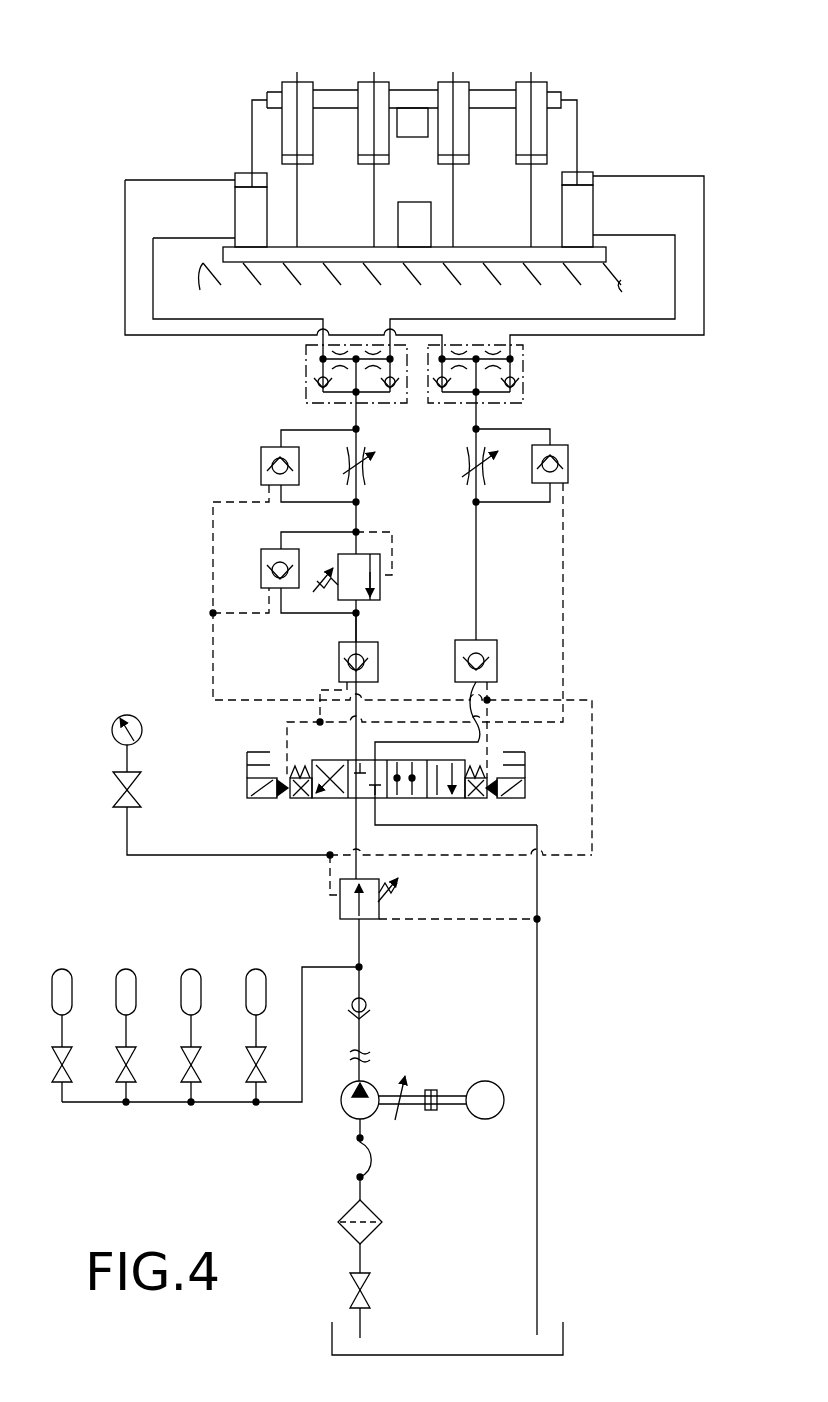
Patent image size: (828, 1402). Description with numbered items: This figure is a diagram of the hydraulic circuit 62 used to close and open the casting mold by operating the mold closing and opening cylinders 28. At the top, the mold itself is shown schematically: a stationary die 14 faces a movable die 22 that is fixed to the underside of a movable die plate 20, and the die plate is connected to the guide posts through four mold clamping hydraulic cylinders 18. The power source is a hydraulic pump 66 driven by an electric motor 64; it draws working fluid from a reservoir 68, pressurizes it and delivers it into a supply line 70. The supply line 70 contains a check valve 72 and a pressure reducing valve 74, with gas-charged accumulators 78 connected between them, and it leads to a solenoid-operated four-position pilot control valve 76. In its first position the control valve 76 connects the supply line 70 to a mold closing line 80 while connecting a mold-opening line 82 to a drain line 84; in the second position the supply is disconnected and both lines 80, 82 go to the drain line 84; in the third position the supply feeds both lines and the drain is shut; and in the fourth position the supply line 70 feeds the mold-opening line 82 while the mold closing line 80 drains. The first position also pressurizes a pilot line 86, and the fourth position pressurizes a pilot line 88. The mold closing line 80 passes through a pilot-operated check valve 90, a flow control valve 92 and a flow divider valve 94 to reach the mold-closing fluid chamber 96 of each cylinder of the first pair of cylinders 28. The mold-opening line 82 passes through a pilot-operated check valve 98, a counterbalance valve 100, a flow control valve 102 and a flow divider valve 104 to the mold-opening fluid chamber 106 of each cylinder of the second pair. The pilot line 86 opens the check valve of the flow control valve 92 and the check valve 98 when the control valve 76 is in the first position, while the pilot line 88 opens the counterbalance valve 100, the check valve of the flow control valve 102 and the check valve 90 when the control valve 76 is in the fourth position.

The stationary die 14 is at (414, 214).
The mold clamping hydraulic cylinders 18 is at (278, 77).
The movable die plate 20 is at (333, 97).
The movable die 22 is at (412, 118).
The mold closing and opening cylinders 28 is at (411, 165).
The hydraulic circuit 62 is at (693, 1039).
The electric motor 64 is at (485, 1120).
The hydraulic pump 66 is at (337, 1118).
The reservoir 68 is at (565, 1338).
The supply line 70 is at (359, 947).
The check valve 72 is at (362, 1000).
The pressure reducing valve 74 is at (340, 910).
The solenoid-operated 4-position pilot control valve 76 is at (228, 786).
The gas-charged accumulators 78 is at (62, 973).
The mold closing line 80 is at (480, 592).
The mold-opening line 82 is at (358, 627).
The drain line 84 is at (540, 986).
The pilot line 86 is at (565, 660).
The pilot line 88 is at (215, 668).
The pilot-operated check valve 90 is at (497, 660).
The flow control valve 92 is at (577, 451).
The flow divider valve 94 is at (523, 355).
The mold-closing fluid chamber 96 is at (236, 176).
The pilot-operated check valve 98 is at (378, 662).
The counterbalance valve 100 is at (396, 553).
The flow control valve 102 is at (255, 451).
The flow divider valve 104 is at (305, 359).
The mold-opening fluid chamber 106 is at (240, 213).